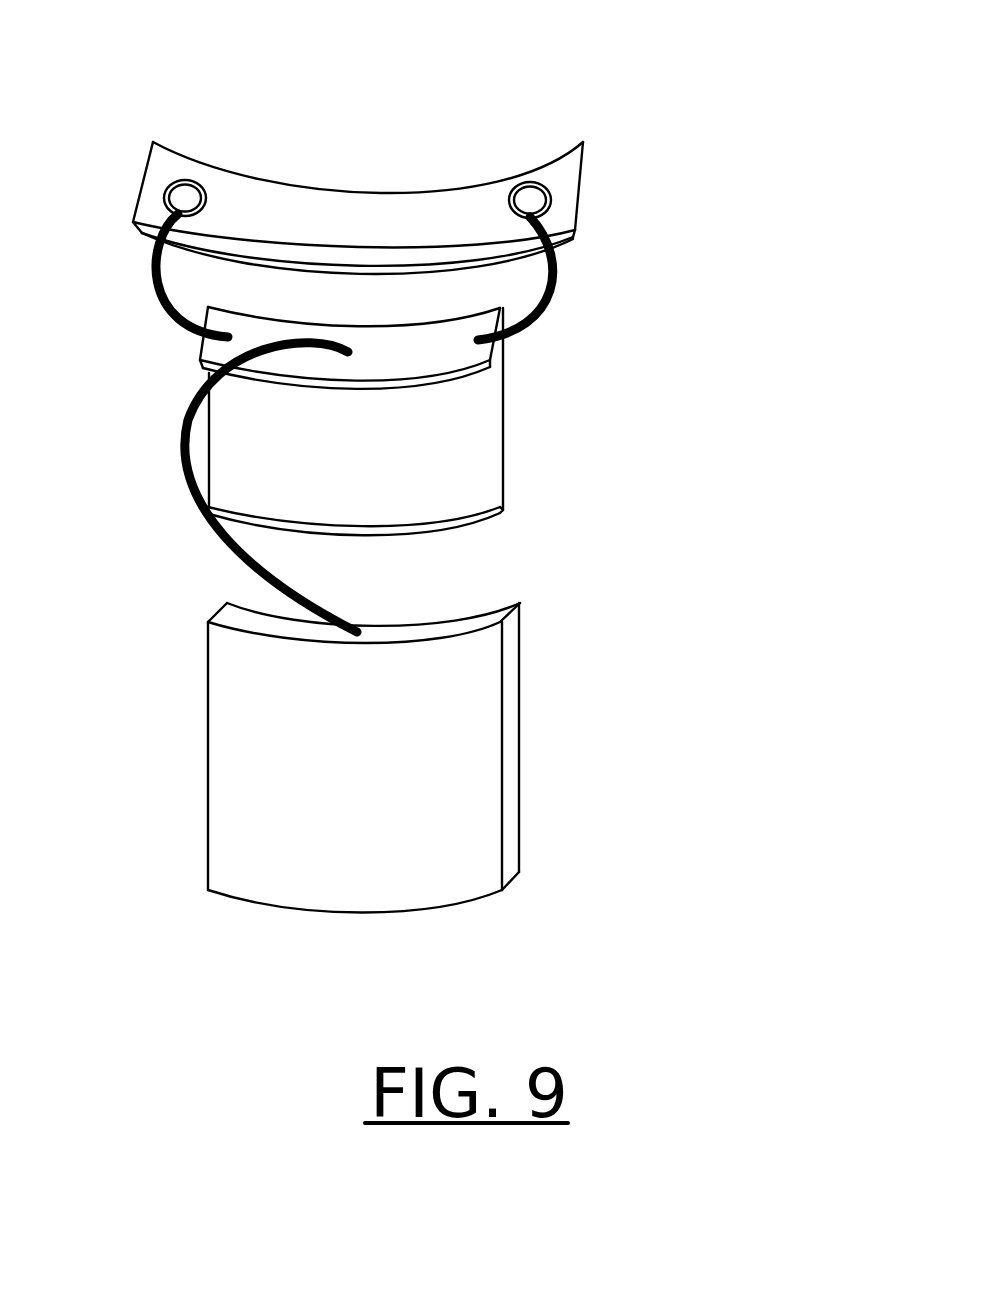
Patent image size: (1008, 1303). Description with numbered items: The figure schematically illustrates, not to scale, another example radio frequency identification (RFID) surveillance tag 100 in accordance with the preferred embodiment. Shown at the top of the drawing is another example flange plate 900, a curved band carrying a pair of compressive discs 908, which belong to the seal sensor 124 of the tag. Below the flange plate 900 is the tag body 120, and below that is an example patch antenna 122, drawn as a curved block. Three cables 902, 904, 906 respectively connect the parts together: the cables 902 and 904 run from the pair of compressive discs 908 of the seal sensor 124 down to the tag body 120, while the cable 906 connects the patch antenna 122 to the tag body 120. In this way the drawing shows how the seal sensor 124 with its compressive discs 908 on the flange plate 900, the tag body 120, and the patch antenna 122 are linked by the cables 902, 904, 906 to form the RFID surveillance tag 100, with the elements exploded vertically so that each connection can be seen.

The radio frequency identification (RFID) surveillance tag 100 is at (351, 143).
The seal sensor 124 is at (169, 176).
The flange plate 900 is at (413, 213).
The compressive discs 908 is at (462, 253).
The cable 902 is at (165, 305).
The cable 904 is at (547, 300).
The cable 906 is at (187, 462).
The tag body 120 is at (448, 425).
The patch antenna 122 is at (477, 705).